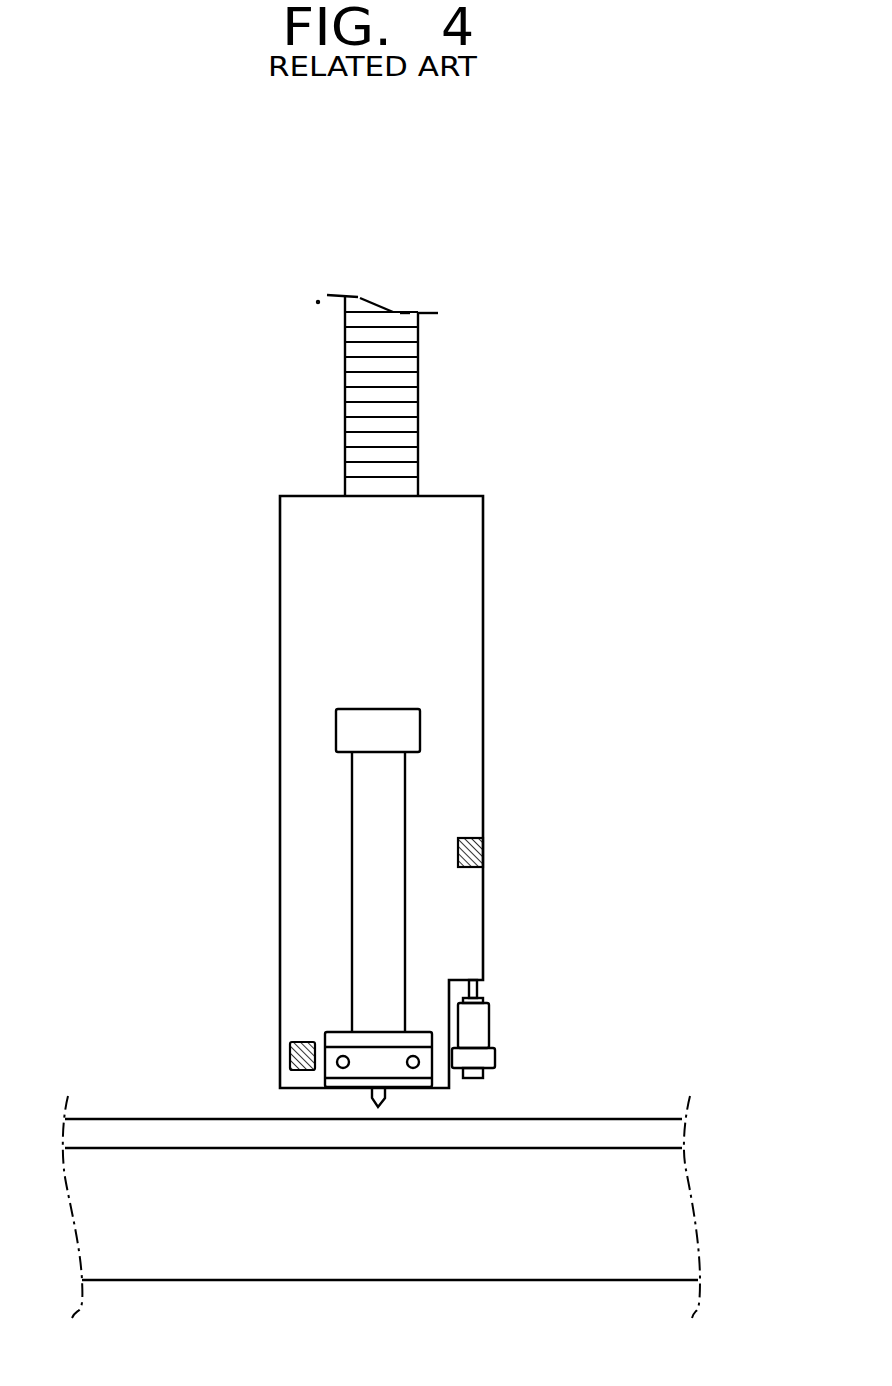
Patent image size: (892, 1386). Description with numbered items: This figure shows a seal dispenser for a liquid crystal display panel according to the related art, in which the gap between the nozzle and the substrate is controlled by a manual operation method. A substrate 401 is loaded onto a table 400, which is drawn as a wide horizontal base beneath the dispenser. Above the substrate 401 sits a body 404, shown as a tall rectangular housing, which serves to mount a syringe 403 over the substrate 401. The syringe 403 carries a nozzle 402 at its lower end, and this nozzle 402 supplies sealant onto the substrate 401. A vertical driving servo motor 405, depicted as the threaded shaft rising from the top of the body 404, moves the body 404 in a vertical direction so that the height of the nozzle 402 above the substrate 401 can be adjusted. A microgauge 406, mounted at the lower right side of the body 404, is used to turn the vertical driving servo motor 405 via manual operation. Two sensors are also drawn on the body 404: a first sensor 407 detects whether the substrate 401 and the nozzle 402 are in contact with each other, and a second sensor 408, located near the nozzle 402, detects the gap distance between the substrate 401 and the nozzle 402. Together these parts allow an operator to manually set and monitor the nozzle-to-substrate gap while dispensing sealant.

The table 400 is at (633, 1257).
The substrate 401 is at (635, 1135).
The nozzle 402 is at (372, 1102).
The syringe 403 is at (376, 806).
The body 404 is at (297, 643).
The vertical driving servo motor 405 is at (398, 406).
The microgauge 406 is at (478, 1027).
The first sensor 407 is at (484, 850).
The second sensor 408 is at (290, 1047).